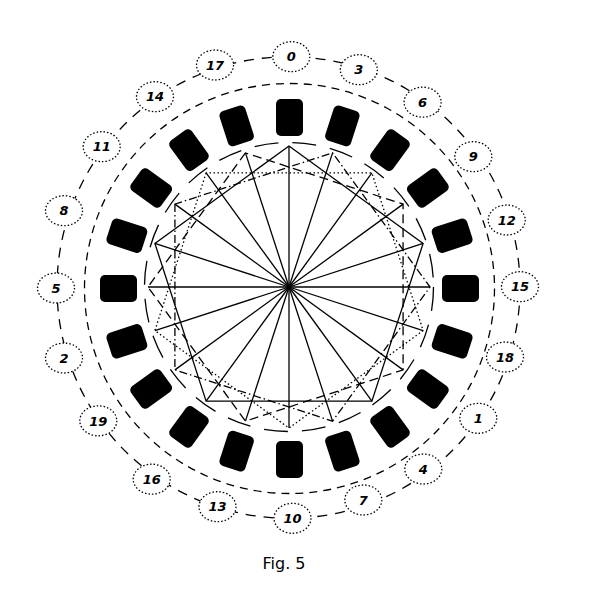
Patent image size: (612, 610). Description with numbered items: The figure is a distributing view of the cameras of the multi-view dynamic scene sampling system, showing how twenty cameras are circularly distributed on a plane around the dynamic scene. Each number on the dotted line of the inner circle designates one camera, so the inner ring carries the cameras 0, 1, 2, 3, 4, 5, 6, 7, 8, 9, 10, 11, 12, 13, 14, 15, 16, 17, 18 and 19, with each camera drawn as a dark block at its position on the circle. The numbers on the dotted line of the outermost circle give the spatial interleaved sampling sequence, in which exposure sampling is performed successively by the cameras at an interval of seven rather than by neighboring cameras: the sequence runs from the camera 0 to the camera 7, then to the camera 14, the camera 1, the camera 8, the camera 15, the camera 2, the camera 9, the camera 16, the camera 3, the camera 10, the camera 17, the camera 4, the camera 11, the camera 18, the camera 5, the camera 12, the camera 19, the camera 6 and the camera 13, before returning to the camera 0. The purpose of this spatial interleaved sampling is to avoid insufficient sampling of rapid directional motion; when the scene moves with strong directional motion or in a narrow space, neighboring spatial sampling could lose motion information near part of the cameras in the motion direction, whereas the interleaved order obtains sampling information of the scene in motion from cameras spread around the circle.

The camera 0 is at (289, 105).
The camera 1 is at (342, 116).
The camera 2 is at (391, 143).
The camera 3 is at (432, 184).
The camera 4 is at (460, 234).
The camera 5 is at (471, 288).
The camera 6 is at (460, 342).
The camera 7 is at (432, 393).
The camera 8 is at (391, 434).
The camera 9 is at (342, 461).
The camera 10 is at (289, 472).
The camera 11 is at (236, 461).
The camera 12 is at (186, 436).
The camera 13 is at (144, 391).
The camera 14 is at (116, 342).
The camera 15 is at (105, 288).
The camera 16 is at (116, 233).
The camera 17 is at (146, 184).
The camera 18 is at (187, 144).
The camera 19 is at (236, 117).